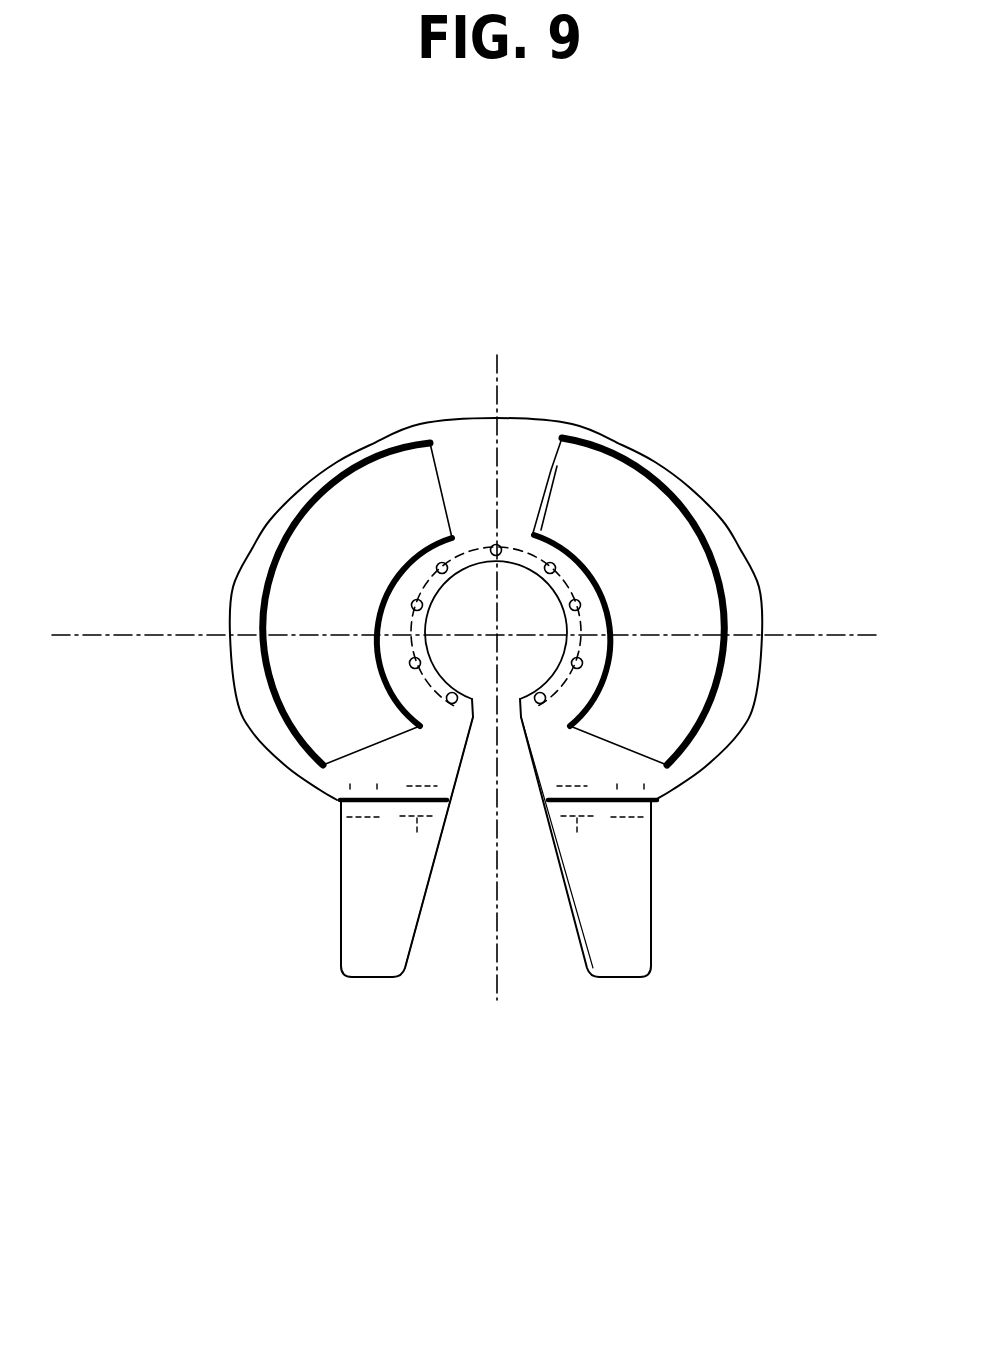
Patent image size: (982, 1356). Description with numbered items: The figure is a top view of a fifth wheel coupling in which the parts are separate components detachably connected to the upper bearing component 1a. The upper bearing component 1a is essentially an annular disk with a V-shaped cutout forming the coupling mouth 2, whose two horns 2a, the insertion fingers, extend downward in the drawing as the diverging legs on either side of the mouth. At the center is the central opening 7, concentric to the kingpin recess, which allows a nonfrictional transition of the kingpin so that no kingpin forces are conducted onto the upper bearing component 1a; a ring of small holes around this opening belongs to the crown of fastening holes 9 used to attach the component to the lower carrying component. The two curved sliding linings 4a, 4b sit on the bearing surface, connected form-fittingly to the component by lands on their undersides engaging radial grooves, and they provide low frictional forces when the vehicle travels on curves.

The upper bearing component 1a is at (250, 445).
The V-shaped coupling mouth 2 is at (463, 895).
The horns of the coupling mouth 2a is at (357, 932).
The sliding lining 4a is at (690, 694).
The sliding lining 4b is at (352, 694).
The central opening 7 is at (503, 590).
The fastening holes 9 is at (600, 597).